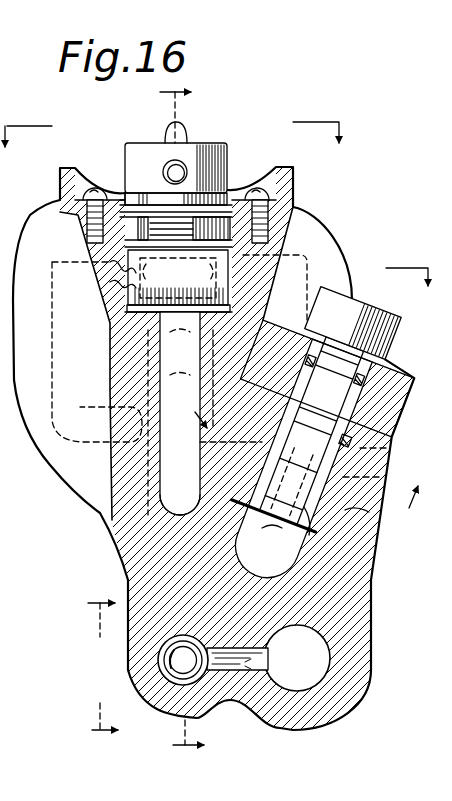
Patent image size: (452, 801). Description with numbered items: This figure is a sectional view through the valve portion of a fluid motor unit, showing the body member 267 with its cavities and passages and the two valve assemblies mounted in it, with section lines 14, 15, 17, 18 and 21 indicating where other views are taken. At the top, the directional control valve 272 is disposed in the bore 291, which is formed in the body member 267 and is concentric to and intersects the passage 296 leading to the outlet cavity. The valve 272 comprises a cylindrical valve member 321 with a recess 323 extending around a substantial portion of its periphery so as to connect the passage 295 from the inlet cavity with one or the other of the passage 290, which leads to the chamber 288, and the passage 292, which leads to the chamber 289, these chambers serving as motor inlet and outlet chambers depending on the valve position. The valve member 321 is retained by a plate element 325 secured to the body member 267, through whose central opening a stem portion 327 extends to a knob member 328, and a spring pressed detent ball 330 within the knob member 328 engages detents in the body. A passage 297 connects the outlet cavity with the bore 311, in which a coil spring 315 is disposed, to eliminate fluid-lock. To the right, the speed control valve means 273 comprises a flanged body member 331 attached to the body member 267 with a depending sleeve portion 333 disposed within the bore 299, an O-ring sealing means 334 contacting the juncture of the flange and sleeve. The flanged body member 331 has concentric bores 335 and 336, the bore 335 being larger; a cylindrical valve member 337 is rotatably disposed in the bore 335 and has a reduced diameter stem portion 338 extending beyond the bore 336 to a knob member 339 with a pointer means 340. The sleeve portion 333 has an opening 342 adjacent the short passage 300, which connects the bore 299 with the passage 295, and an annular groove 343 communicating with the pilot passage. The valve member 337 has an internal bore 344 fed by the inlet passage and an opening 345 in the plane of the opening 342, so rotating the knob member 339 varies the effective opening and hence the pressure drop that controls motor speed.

The section line 14- 14 is at (157, 102).
The section line 15- 15 is at (90, 669).
The section line 17- 17 is at (175, 124).
The section line 18- 18 is at (411, 262).
The section line 21- 21 is at (300, 463).
The body member 267 is at (110, 363).
The directional control valve 272 is at (208, 198).
The speed control valve means 273 is at (298, 423).
The chamber 288 is at (85, 442).
The chamber 289 is at (214, 444).
The passage 290 is at (142, 262).
The bore 291 is at (176, 158).
The passage 292 is at (206, 282).
The passage 295 is at (165, 512).
The passage 296 is at (160, 566).
The passage 297 is at (237, 672).
The bore 299 is at (383, 458).
The passage 300 is at (180, 413).
The bore 311 is at (160, 673).
The coil spring 315 is at (160, 657).
The cylindrical valve member 321 is at (281, 243).
The recess 323 is at (110, 282).
The plate element 325 is at (293, 193).
The stem portion 327 is at (226, 172).
The knob member 328 is at (125, 150).
The spring pressed detent ball 330 is at (168, 163).
The flanged body member 331 is at (334, 381).
The sleeve portion 333 is at (369, 512).
The O-ring sealing means 334 is at (395, 441).
The bore 335 is at (309, 535).
The bore 336 is at (397, 413).
The cylindrical valve member 337 is at (293, 461).
The stem portion 338 is at (335, 316).
The knob member 339 is at (362, 299).
The pointer means 340 is at (280, 315).
The opening 342 is at (288, 472).
The annular groove 343 is at (378, 481).
The internal bore 344 is at (292, 545).
The opening 345 is at (297, 425).